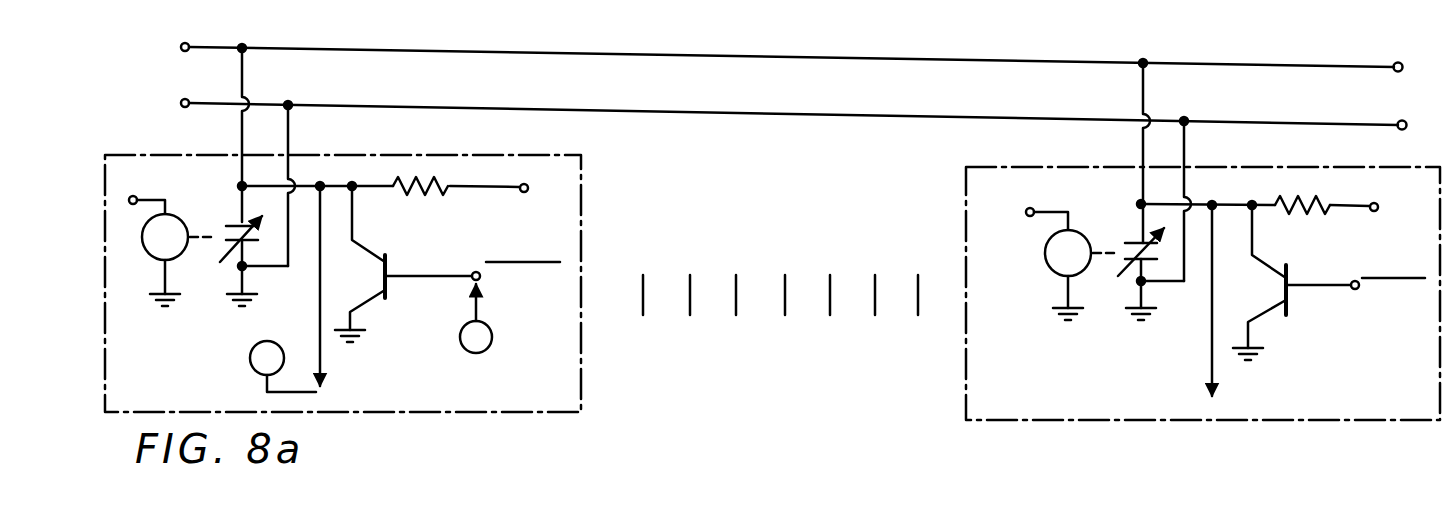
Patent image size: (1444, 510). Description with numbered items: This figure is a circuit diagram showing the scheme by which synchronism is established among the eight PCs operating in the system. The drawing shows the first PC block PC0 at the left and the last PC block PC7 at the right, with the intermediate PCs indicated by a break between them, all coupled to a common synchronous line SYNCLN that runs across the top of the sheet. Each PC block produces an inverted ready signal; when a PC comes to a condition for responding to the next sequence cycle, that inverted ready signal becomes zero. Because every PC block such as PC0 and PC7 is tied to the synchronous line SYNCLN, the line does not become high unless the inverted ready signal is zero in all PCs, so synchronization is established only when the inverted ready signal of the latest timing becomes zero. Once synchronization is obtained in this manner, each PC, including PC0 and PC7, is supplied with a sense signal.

The PC PC0 is at (581, 380).
The PC PC7 is at (966, 370).
The synchronous line SYNCLN is at (600, 52).